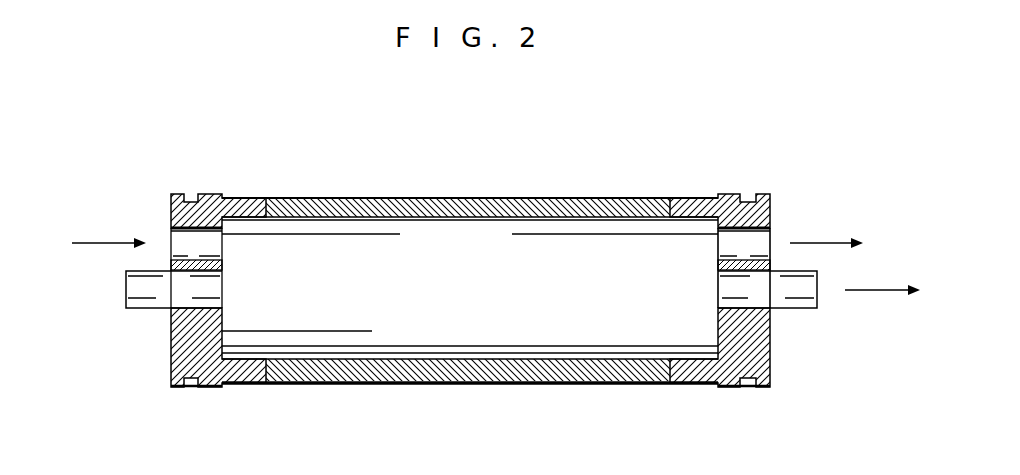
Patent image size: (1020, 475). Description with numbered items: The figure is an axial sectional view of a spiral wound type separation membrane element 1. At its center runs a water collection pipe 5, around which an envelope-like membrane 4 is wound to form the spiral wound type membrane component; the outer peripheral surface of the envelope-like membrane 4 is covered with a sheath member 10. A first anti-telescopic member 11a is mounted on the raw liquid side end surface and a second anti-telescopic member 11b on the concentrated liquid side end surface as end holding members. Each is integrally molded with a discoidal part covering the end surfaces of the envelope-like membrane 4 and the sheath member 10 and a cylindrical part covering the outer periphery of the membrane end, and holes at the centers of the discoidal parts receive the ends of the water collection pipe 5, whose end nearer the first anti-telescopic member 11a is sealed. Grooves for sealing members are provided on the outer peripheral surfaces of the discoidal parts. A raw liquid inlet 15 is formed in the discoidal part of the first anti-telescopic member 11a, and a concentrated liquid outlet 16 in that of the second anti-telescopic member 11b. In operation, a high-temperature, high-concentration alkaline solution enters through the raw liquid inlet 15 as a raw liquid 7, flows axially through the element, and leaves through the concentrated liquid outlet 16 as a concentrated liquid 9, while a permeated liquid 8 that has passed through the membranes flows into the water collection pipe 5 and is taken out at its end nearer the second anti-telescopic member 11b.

The spiral wound type separation membrane element 1 is at (534, 156).
The envelope-like membrane 4 is at (412, 330).
The water collection pipe 5 is at (148, 302).
The raw liquid 7 is at (108, 243).
The permeated liquid 8 is at (882, 290).
The concentrated liquid 9 is at (824, 243).
The sheath member 10 is at (341, 206).
The first anti-telescopic member 11a is at (175, 360).
The second anti-telescopic member 11b is at (763, 357).
The raw liquid inlet 15 is at (193, 247).
The concentrated liquid outlet 16 is at (744, 243).